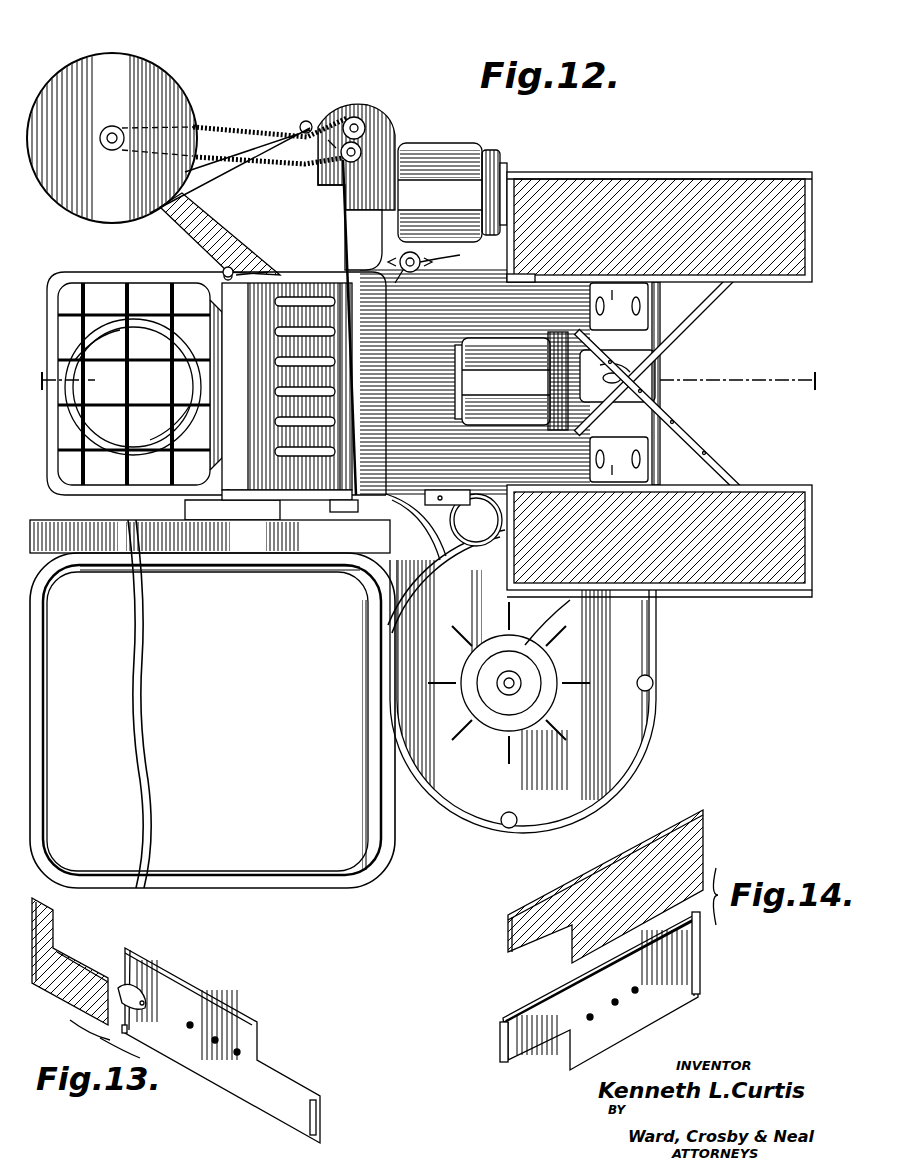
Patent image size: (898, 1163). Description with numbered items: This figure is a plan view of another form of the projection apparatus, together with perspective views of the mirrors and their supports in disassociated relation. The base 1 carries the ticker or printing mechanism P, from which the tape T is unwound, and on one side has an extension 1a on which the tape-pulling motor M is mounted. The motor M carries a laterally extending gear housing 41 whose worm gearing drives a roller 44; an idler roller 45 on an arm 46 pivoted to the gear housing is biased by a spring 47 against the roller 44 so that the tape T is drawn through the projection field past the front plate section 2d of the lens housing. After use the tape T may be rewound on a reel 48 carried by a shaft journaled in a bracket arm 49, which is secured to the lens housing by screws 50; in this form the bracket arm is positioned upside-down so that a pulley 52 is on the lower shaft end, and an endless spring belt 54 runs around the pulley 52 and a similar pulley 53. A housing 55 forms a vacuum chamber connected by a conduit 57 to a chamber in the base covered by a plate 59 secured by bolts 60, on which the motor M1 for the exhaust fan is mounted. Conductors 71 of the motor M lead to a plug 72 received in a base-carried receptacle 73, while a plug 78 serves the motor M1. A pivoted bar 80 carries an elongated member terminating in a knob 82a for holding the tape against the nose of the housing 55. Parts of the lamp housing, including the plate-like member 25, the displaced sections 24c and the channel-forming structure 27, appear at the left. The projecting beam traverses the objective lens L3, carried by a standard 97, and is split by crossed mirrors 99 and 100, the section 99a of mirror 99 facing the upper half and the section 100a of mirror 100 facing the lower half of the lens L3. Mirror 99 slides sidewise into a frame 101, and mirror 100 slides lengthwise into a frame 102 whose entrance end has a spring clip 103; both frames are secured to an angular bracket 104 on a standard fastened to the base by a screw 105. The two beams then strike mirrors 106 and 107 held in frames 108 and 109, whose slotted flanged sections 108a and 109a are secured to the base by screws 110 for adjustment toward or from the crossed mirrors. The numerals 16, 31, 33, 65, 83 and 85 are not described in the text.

In FIG. 12, the base 1 is at (143, 275).
In FIG. 12, the extension of the base 1a is at (506, 163).
In FIG. 12, the front plate section 2d is at (376, 430).
In FIG. 12, the section line 16 is at (430, 381).
In FIG. 12, the displaced sections of cylindrical member 24c is at (118, 300).
In FIG. 12, the plate-like member 25 is at (143, 468).
In FIG. 12, the passage or channel-forming structure 27 is at (196, 300).
In FIG. 12, the arm pivot link 31 is at (236, 273).
In FIG. 12, the grille housing 33 is at (60, 282).
In FIG. 12, the gear housing 41 is at (332, 180).
In FIG. 12, the roller 44 is at (362, 146).
In FIG. 12, the idler roller 45 is at (356, 117).
In FIG. 12, the arm 46 is at (316, 121).
In FIG. 12, the spring 47 is at (328, 147).
In FIG. 12, the reel 48 is at (155, 85).
In FIG. 12, the bracket arm 49 is at (205, 250).
In FIG. 12, the screws 50 is at (250, 268).
In FIG. 12, the pulley 52 is at (112, 125).
In FIG. 12, the pulley 53 is at (386, 137).
In FIG. 12, the endless spring belt 54 is at (245, 123).
In FIG. 12, the housing 55 is at (376, 490).
In FIG. 12, the conduit 57 is at (432, 566).
In FIG. 12, the plate 59 is at (600, 749).
In FIG. 12, the bolts 60 is at (508, 828).
In FIG. 12, the pulley 65 is at (476, 520).
In FIG. 12, the conductors 71 is at (445, 265).
In FIG. 12, the connecting plug 72 is at (408, 270).
In FIG. 12, the conductor-carrying receptacle 73 is at (400, 258).
In FIG. 12, the plug 78 is at (58, 330).
In FIG. 12, the bar 80 is at (440, 490).
In FIG. 12, the knob 82a is at (348, 505).
In FIG. 12, the ventilation slots 83 is at (290, 330).
In FIG. 12, the film strip 85 is at (240, 555).
In FIG. 12, the standard 97 is at (500, 360).
In FIG. 12, the mirror 99 is at (705, 449).
In FIG. 14, the mirror 99 is at (625, 880).
In FIG. 12, the section of mirror 99 99a is at (712, 291).
In FIG. 14, the section of mirror 99 99a is at (522, 918).
In FIG. 12, the mirror 100 is at (710, 306).
In FIG. 13, the mirror 100 is at (46, 923).
In FIG. 12, the section of mirror 100 100a is at (680, 394).
In FIG. 13, the section of mirror 100 100a is at (70, 968).
In FIG. 14, the frame 101 is at (650, 1005).
In FIG. 12, the frame 102 is at (746, 286).
In FIG. 13, the frame 102 is at (210, 1013).
In FIG. 13, the spring clip 103 is at (118, 988).
In FIG. 12, the angular bracket 104 is at (672, 358).
In FIG. 12, the screw 105 is at (617, 376).
In FIG. 12, the mirror 106 is at (720, 575).
In FIG. 12, the mirror 107 is at (659, 205).
In FIG. 12, the frame 108 is at (808, 596).
In FIG. 12, the flanged section 108a is at (592, 456).
In FIG. 12, the frame 109 is at (618, 176).
In FIG. 12, the flanged section 109a is at (590, 302).
In FIG. 12, the screws 110 is at (618, 292).
In FIG. 12, the motor M is at (448, 156).
In FIG. 12, the electric motor M1 is at (546, 704).
In FIG. 12, the objective lens L3 is at (462, 376).
In FIG. 12, the tape T is at (349, 247).
In FIG. 12, the printing mechanism P is at (312, 860).